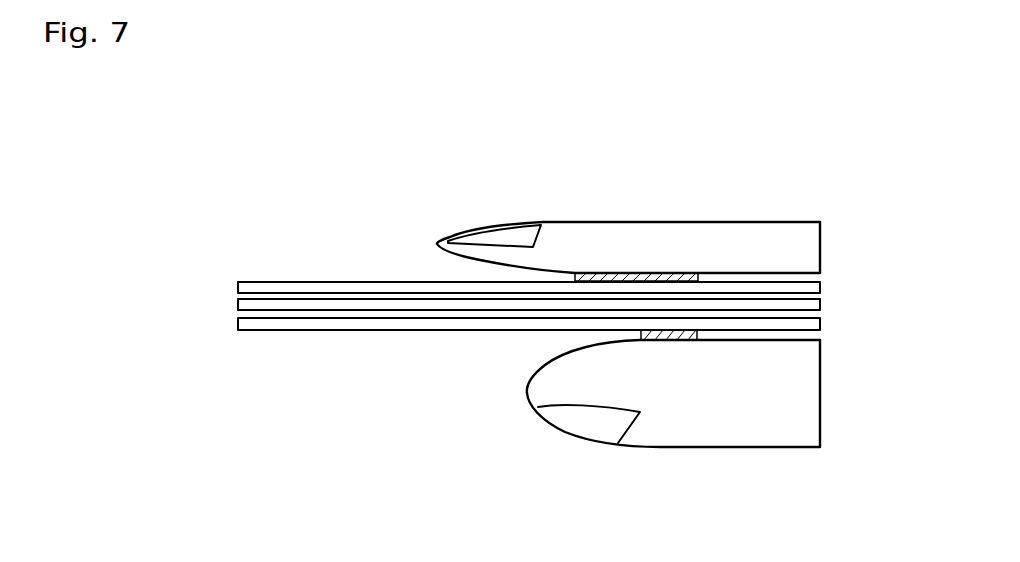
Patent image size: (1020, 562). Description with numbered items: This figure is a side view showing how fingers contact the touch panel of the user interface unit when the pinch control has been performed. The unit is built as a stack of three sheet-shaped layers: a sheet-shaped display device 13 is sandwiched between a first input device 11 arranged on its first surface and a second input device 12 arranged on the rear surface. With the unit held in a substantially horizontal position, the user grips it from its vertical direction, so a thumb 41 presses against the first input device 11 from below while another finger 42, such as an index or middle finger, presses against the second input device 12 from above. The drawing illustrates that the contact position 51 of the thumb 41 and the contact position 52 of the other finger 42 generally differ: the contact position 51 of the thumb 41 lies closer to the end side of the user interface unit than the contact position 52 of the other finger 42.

The first input device 11 is at (238, 322).
The second input device 12 is at (238, 286).
The display device 13 is at (238, 304).
The thumb 41 is at (822, 404).
The other finger 42 is at (822, 250).
The contact position of the thumb 51 is at (640, 334).
The contact position of the other finger 52 is at (573, 278).